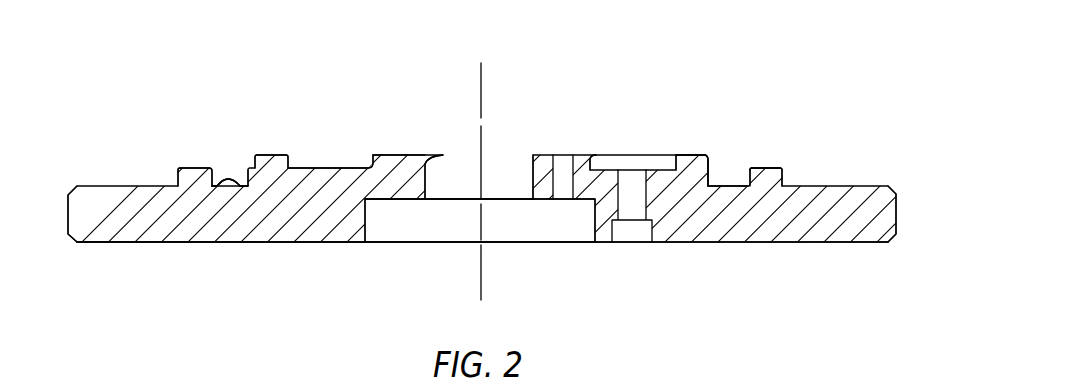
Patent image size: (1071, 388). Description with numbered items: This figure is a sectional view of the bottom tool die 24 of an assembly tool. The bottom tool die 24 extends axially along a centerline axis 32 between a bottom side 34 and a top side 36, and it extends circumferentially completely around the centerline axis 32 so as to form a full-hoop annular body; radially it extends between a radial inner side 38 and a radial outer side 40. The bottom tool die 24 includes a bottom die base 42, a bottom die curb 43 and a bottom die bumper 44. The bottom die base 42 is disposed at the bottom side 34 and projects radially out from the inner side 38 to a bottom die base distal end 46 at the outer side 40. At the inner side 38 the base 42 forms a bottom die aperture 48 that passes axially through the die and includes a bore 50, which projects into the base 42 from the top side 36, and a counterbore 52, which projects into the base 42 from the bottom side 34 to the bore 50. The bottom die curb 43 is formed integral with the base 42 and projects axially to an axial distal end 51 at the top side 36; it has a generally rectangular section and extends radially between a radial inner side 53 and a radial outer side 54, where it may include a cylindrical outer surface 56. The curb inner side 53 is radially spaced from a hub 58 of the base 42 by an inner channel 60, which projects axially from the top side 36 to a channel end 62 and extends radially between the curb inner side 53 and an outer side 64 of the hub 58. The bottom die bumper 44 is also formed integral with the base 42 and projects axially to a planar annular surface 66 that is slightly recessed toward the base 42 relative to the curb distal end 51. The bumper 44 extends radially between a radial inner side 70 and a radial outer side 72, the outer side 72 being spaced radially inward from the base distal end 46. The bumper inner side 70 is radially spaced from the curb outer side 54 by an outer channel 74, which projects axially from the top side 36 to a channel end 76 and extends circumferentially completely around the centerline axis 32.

The bottom tool die 24 is at (112, 118).
The centerline axis 32 is at (477, 73).
The bottom side 34 is at (348, 243).
The top side 36 is at (382, 153).
The radial inner side 38 is at (440, 153).
The radial outer side 40 is at (68, 217).
The bottom die base 42 is at (208, 256).
The bottom die curb 43 is at (271, 140).
The bottom die bumper 44 is at (190, 158).
The bottom die base distal end 46 is at (897, 215).
The bottom die aperture 48 is at (514, 247).
The bore 50 is at (503, 157).
The axial distal end 51 is at (697, 155).
The counterbore 52 is at (547, 247).
The radial inner side 53 is at (665, 160).
The radial outer side 54 is at (246, 182).
The outer surface 56 is at (712, 165).
The hub 58 is at (406, 140).
The inner channel 60 is at (601, 145).
The channel end 62 is at (657, 160).
The outer side 64 is at (590, 172).
The annular surface 66 is at (770, 160).
The radial inner side 70 is at (215, 165).
The radial outer side 72 is at (783, 177).
The outer channel 74 is at (237, 156).
The channel end 76 is at (217, 190).